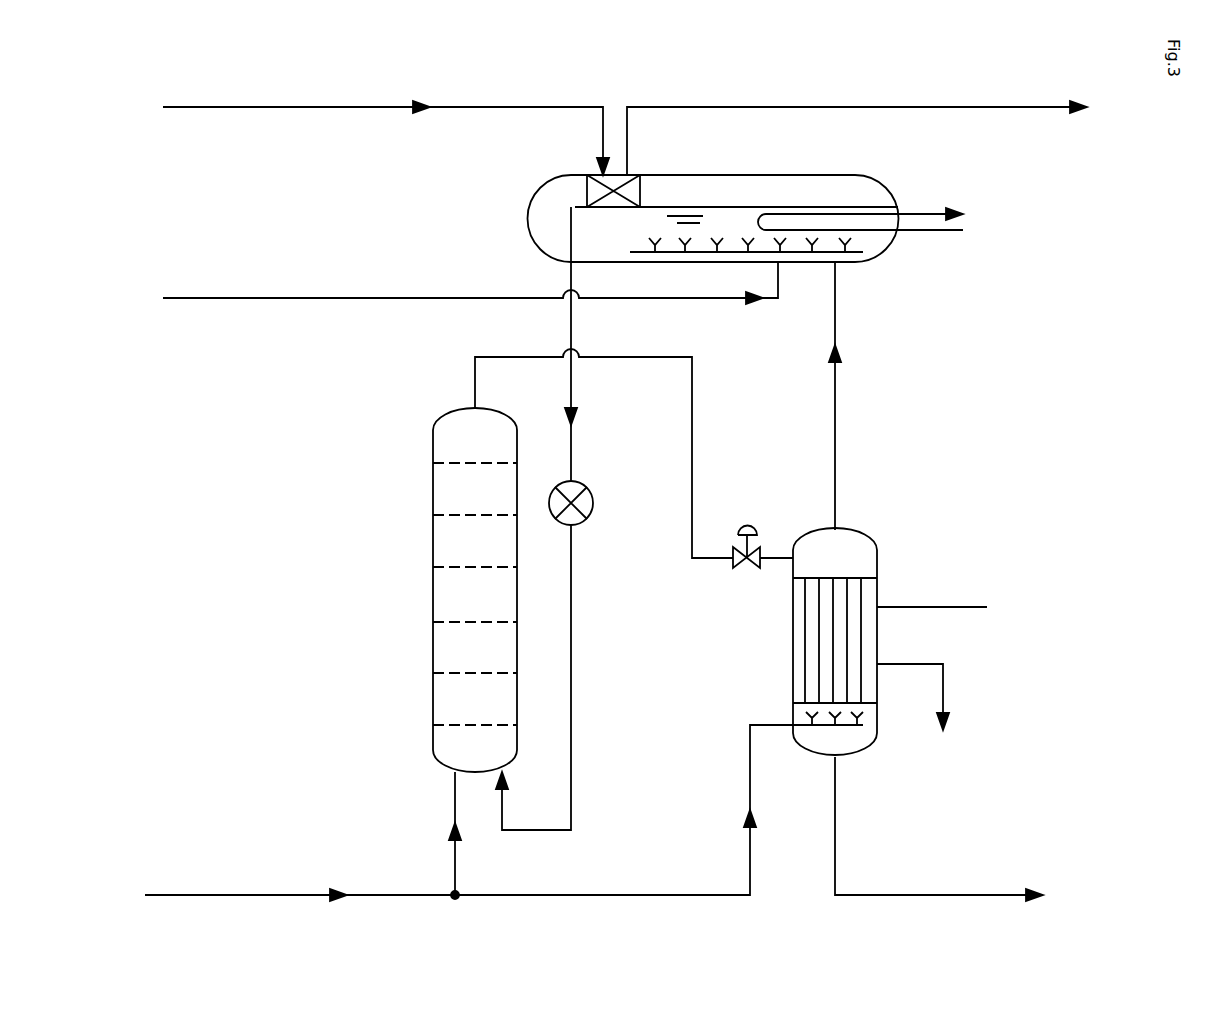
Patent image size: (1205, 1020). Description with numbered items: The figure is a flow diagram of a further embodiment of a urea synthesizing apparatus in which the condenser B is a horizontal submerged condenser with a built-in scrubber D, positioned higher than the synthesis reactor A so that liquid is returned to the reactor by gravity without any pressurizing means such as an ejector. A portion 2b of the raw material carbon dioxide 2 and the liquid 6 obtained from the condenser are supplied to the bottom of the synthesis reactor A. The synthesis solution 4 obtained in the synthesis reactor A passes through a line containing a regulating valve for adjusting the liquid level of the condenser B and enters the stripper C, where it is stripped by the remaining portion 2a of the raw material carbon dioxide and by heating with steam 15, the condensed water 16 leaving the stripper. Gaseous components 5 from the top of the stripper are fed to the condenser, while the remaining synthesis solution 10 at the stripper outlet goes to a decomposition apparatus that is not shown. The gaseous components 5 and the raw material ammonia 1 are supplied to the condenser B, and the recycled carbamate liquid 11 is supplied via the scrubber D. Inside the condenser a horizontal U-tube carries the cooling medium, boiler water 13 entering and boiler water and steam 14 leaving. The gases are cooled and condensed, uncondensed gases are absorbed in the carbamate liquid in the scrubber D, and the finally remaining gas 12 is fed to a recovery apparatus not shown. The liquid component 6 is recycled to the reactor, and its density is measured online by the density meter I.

The raw material ammonia 1 is at (287, 298).
The raw material carbon dioxide 2 is at (287, 895).
The remaining portion of raw material carbon dioxide 2a is at (607, 892).
The portion of raw material carbon dioxide 2b is at (453, 858).
The synthesis solution at synthesis reactor outlet 4 is at (668, 357).
The outlet gas at stripper top 5 is at (835, 415).
The liquid obtained from condenser 6 is at (570, 680).
The liquid at stripper outlet 10 is at (922, 890).
The recycled carbamate liquid 11 is at (273, 107).
The gas obtained from condenser 12 is at (985, 103).
The cooling medium at condenser inlet 13 is at (937, 233).
The cooling medium at condenser outlet 14 is at (922, 213).
The steam for stripper heating 15 is at (953, 607).
The condensed water at stripper outlet 16 is at (945, 690).
The synthesizing reactor A is at (437, 428).
The condenser B is at (762, 175).
The stripper C is at (867, 557).
The scrubber D is at (635, 175).
The density meter I is at (590, 503).